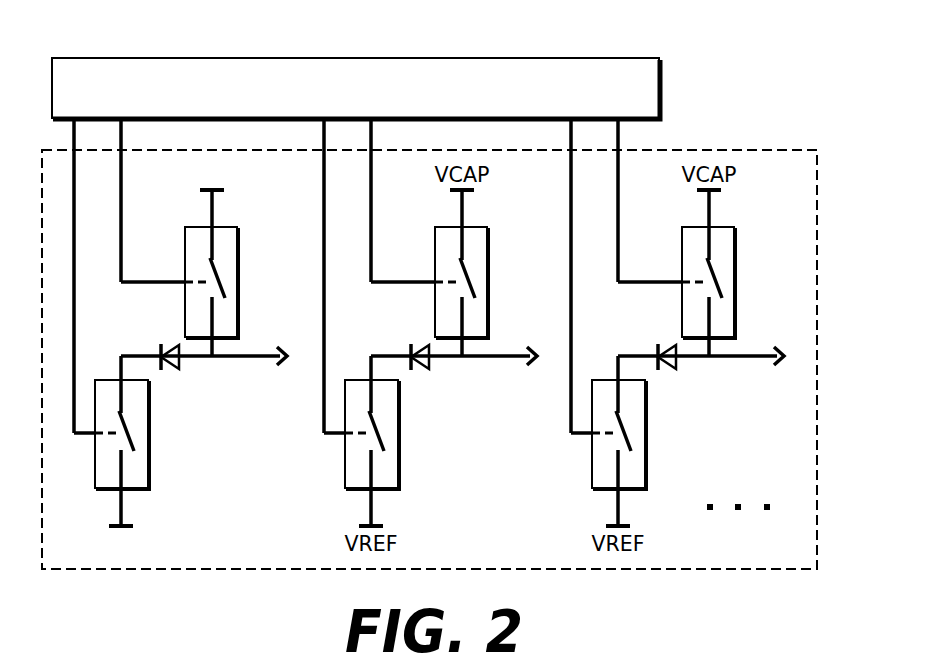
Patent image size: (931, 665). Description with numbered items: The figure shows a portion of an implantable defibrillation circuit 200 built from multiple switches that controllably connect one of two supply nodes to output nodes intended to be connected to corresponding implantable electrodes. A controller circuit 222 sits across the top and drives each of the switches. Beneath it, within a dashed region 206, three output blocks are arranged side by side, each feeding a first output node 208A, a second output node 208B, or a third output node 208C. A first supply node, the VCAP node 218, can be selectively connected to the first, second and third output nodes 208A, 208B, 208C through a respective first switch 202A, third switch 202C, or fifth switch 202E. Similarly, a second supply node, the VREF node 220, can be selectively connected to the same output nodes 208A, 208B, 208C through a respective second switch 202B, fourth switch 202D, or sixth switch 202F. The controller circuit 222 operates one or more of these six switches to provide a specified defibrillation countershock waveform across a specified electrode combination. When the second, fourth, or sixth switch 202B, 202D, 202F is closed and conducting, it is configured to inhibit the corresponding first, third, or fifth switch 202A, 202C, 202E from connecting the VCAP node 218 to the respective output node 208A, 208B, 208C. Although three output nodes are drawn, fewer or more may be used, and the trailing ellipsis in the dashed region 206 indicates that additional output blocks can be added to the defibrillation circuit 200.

The implantable defibrillation circuit 200 is at (703, 106).
The first switch 202A is at (238, 262).
The second switch 202B is at (150, 405).
The third switch 202C is at (488, 262).
The fourth switch 202D is at (400, 405).
The fifth switch 202E is at (735, 262).
The sixth switch 202F is at (647, 405).
The switch array 206 is at (657, 570).
The first output node 208A is at (232, 359).
The second output node 208B is at (482, 359).
The third output node 208C is at (729, 359).
The VCAP node 218 is at (213, 207).
The VREF node 220 is at (122, 503).
The controller circuit 222 is at (205, 58).